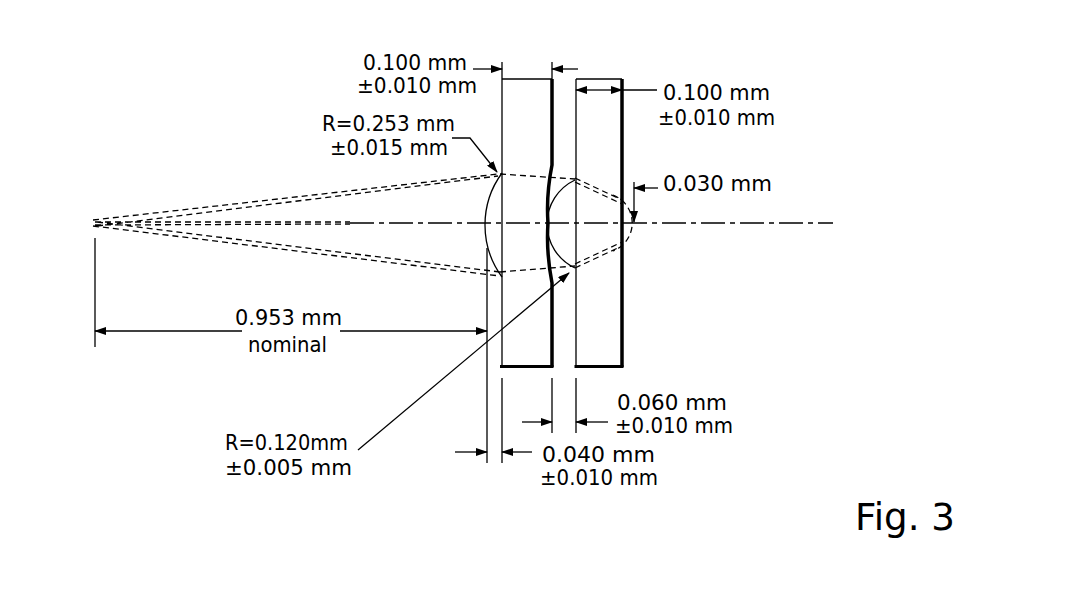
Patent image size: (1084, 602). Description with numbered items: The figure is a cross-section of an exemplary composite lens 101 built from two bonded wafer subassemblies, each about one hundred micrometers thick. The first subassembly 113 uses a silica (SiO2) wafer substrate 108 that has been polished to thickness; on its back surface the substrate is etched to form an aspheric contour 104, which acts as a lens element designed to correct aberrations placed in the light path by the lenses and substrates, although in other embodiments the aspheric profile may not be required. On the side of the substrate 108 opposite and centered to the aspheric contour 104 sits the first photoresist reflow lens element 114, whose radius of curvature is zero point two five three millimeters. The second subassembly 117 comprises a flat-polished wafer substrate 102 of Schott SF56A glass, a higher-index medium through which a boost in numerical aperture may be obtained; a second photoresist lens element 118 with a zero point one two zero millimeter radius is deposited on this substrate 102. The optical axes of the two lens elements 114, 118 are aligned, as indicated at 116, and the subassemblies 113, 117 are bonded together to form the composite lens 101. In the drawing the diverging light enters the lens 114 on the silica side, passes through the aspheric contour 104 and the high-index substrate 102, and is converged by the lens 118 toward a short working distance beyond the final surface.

The composite lens 101 is at (268, 102).
The second wafer substrate 102 is at (612, 75).
The aspheric contour 104 is at (546, 280).
The first wafer substrate 108 is at (521, 67).
The first subassembly 113 is at (480, 374).
The first photoresist reflow lens element 114 is at (475, 208).
The alignment of the subassemblies 116 is at (833, 222).
The second subassembly 117 is at (652, 337).
The second lens element 118 is at (623, 272).